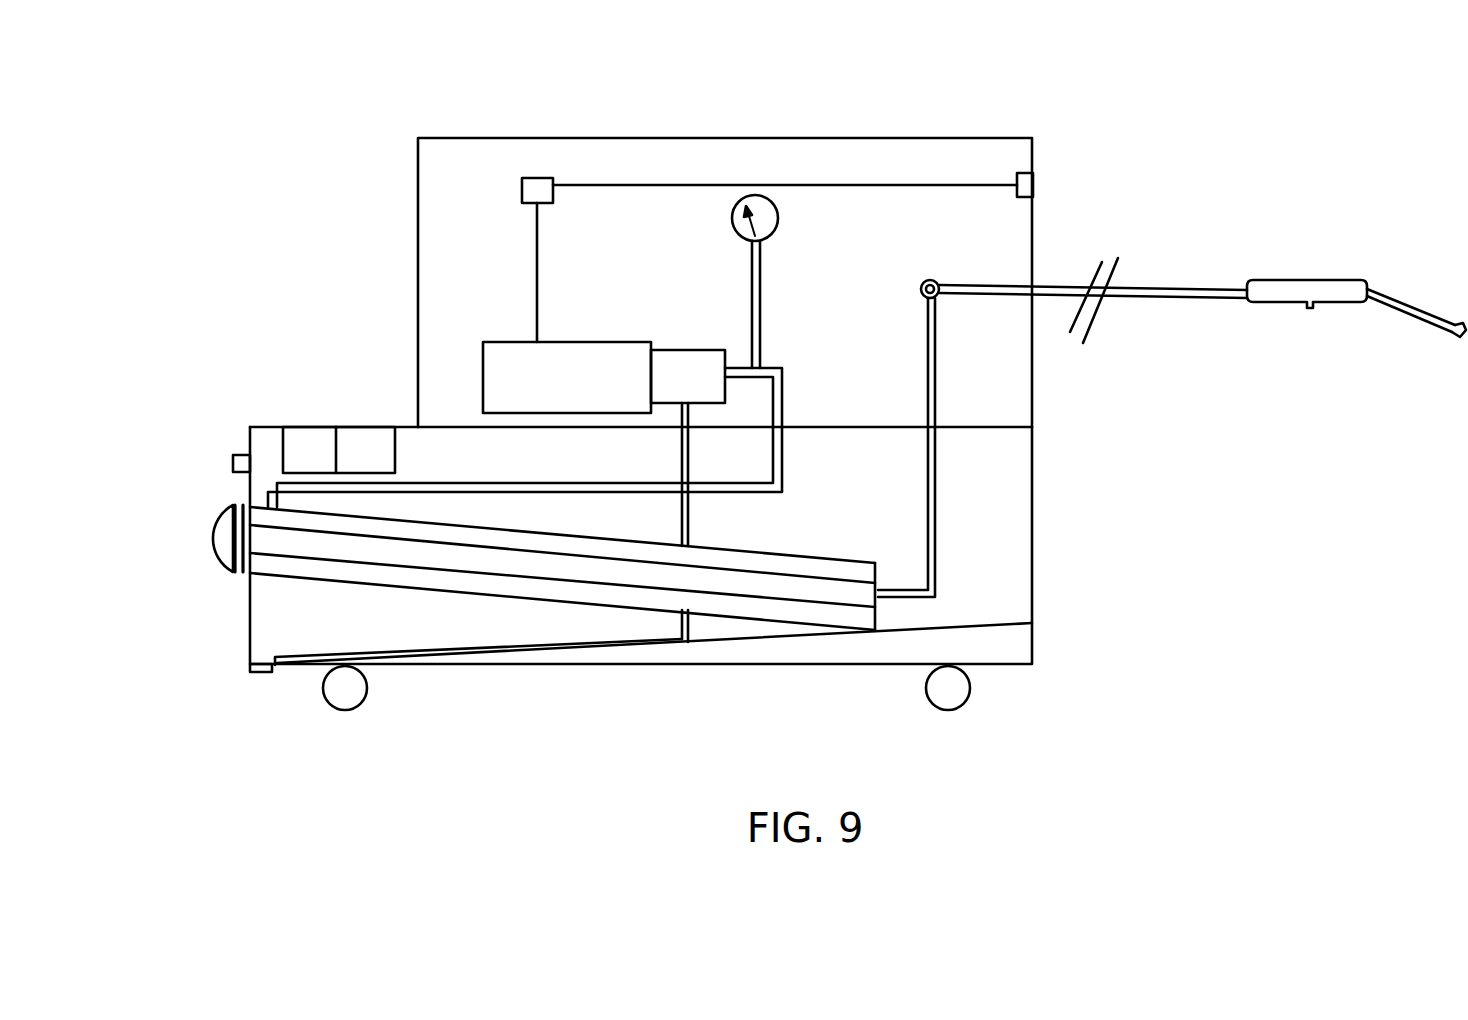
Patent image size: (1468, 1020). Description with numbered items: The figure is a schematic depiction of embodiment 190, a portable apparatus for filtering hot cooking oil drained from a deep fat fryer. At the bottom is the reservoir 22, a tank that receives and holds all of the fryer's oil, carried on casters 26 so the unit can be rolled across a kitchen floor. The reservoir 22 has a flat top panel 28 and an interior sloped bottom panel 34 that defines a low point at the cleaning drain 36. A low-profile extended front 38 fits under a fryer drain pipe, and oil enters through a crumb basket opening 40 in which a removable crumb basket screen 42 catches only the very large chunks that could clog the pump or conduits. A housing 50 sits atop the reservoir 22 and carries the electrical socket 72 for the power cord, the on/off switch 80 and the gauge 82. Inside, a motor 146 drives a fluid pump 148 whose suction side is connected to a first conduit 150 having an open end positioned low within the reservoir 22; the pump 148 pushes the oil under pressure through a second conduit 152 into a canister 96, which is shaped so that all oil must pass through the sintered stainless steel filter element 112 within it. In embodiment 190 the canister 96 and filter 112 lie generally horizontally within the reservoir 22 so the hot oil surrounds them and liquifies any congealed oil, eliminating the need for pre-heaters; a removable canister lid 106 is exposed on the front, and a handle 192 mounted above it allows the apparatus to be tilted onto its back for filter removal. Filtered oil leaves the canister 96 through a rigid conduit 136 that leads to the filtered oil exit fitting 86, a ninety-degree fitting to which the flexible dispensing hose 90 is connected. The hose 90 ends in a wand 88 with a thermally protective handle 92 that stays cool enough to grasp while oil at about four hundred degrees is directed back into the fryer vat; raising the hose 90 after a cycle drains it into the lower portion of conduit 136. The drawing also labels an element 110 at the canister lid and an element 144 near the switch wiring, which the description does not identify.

The embodiment 190 is at (340, 217).
The reservoir 22 is at (1033, 478).
The casters 26 is at (365, 695).
The top panel 28 is at (974, 427).
The sloped bottom panel 34 is at (985, 628).
The cleaning drain 36 is at (255, 675).
The extended front 38 is at (265, 427).
The crumb basket opening 40 is at (305, 427).
The crumb basket screen 42 is at (336, 427).
The housing 50 is at (897, 138).
The electrical socket 72 is at (1033, 178).
The on/off switch 80 is at (535, 178).
The gauge 82 is at (754, 195).
The filtered oil exit fitting 86 is at (938, 282).
The wand 88 is at (1423, 322).
The flexible dispensing hose 90 is at (1040, 297).
The thermally protective handle 92 is at (1293, 280).
The canister 96 is at (562, 563).
The canister lid 106 is at (213, 538).
The clamp rings 110 is at (240, 575).
The filter element 112 is at (622, 570).
The rigid conduit 136 is at (937, 568).
The electrical wire 144 is at (605, 188).
The motor 146 is at (590, 342).
The fluid pump 148 is at (682, 350).
The first conduit 150 is at (682, 452).
The second conduit 152 is at (784, 402).
The handle 192 is at (233, 455).